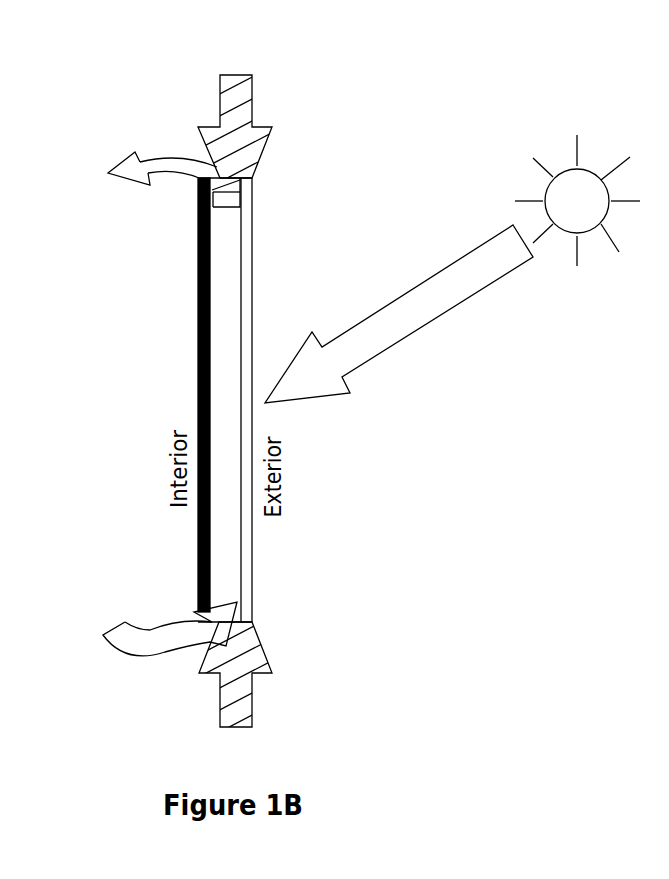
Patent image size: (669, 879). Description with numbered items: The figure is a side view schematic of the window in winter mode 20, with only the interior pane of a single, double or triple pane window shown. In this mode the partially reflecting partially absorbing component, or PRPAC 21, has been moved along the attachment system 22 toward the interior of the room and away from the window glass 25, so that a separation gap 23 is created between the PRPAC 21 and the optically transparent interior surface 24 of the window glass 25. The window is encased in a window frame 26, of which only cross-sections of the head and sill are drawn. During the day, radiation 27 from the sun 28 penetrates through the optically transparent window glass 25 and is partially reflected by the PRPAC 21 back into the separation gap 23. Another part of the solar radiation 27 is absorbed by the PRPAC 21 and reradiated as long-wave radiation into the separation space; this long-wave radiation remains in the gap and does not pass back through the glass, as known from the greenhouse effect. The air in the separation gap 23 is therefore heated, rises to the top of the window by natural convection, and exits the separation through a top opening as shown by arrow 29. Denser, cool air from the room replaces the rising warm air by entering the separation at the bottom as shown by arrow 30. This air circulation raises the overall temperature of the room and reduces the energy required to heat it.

The winter mode 20 is at (358, 167).
The partially reflecting partially absorbing component (PRPAC) 21 is at (198, 327).
The attachment system 22 is at (213, 197).
The separation gap 23 is at (225, 400).
The optically transparent interior surface 24 is at (253, 253).
The window glass 25 is at (253, 337).
The window frame 26 is at (250, 158).
The radiation 27 is at (399, 314).
The sun 28 is at (577, 200).
The arrow 29 is at (140, 173).
The arrow 30 is at (160, 627).